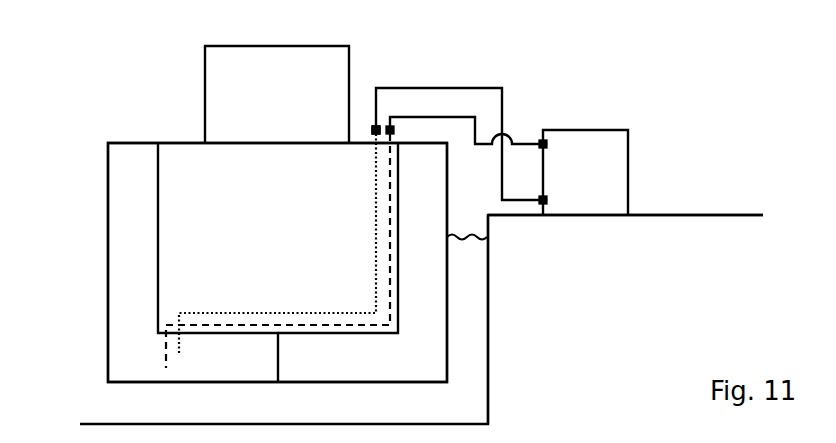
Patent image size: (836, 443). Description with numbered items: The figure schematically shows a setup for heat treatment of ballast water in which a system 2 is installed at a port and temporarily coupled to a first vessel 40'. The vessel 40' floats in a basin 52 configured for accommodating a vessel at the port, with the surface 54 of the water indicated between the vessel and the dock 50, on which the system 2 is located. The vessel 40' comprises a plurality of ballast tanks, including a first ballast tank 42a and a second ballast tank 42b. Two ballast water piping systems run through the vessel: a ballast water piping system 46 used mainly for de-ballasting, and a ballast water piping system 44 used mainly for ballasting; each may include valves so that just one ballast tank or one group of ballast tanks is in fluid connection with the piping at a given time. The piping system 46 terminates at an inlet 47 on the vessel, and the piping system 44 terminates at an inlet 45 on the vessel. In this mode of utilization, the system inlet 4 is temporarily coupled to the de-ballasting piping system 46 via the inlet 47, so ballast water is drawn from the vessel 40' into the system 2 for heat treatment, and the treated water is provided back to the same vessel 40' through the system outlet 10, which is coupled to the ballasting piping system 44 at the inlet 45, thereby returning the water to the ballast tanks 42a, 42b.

The vessel 40' is at (236, 205).
The first ballast tank 42a is at (357, 257).
The second ballast tank 42b is at (198, 262).
The ballast water piping system 44 is at (376, 172).
The ballast water piping system 46 is at (390, 215).
The system outlet 10 is at (373, 125).
The inlet on the vessel for ballast water piping system 45 is at (373, 130).
The inlet on the vessel for ballast water piping system 47 is at (386, 126).
The system inlet 4 is at (391, 117).
The system for heat treatment of ballast water 2 is at (585, 172).
The dock 50 is at (518, 217).
The basin 52 is at (490, 270).
The surface of the water 54 is at (490, 240).